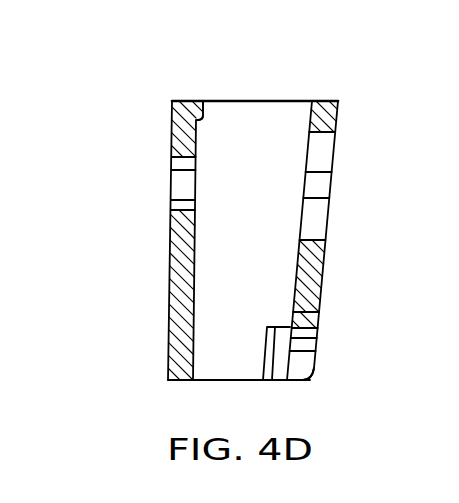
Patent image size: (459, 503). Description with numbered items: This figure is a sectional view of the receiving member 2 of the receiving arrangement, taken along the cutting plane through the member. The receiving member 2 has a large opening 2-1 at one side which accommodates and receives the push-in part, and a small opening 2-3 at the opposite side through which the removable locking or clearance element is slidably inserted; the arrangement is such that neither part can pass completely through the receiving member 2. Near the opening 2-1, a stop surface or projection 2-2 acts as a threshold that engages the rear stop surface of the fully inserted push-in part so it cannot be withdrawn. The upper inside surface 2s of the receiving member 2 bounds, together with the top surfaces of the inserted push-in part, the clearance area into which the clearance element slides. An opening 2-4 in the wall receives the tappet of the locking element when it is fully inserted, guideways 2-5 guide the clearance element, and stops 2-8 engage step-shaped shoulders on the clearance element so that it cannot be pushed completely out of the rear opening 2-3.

The receiving member 2 is at (170, 242).
The opening 2-1 is at (252, 100).
The stop surface or projection 2-2 is at (208, 103).
The small opening 2-3 is at (225, 380).
The upper inside surface 2s is at (300, 240).
The opening 2-4 is at (307, 317).
The guideways 2-5 is at (278, 356).
The stops 2-8 is at (277, 356).